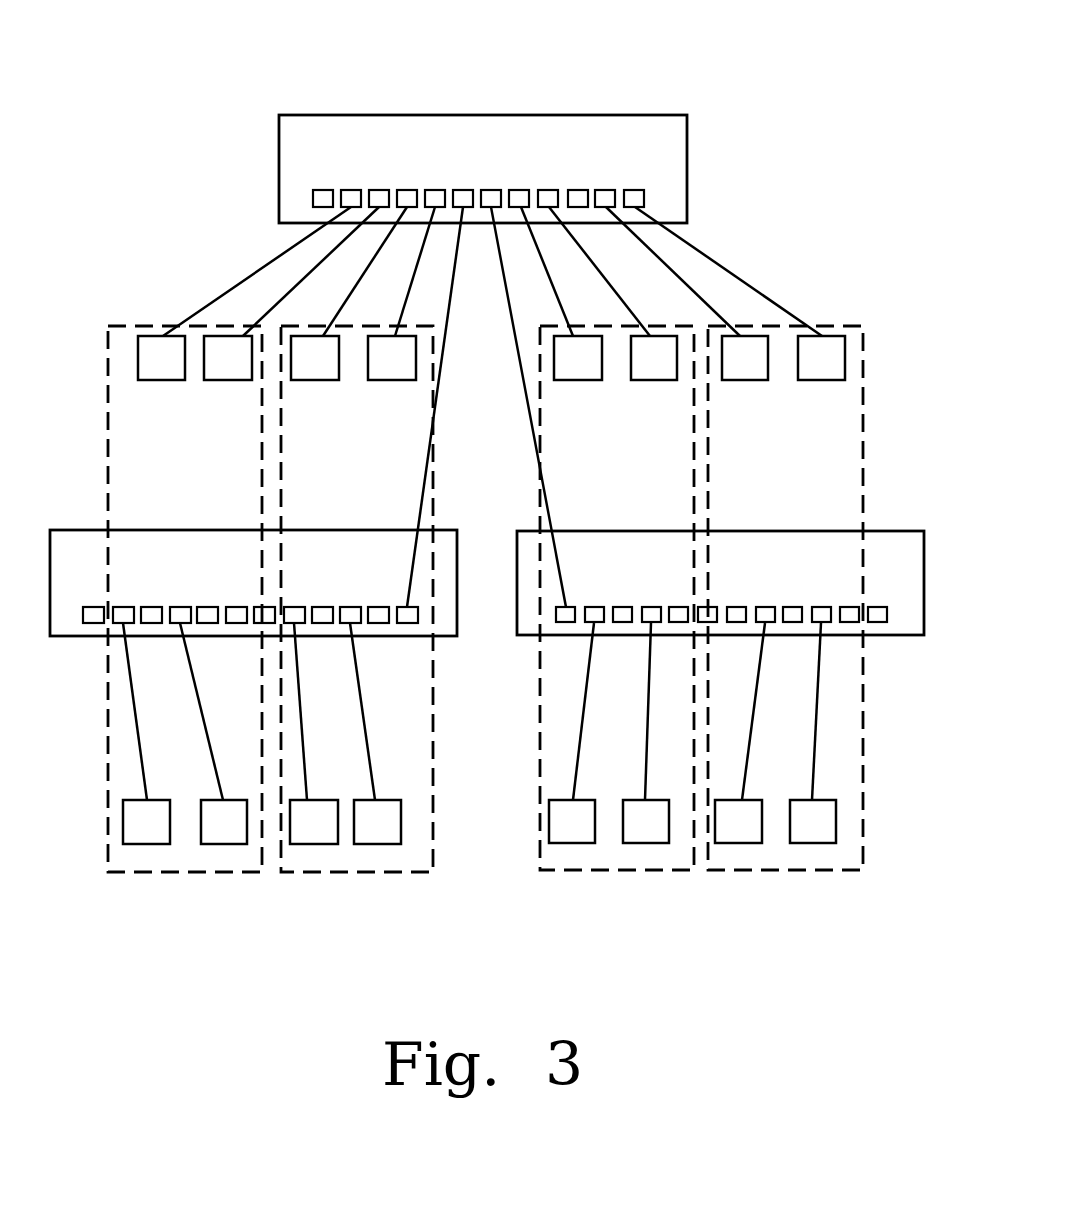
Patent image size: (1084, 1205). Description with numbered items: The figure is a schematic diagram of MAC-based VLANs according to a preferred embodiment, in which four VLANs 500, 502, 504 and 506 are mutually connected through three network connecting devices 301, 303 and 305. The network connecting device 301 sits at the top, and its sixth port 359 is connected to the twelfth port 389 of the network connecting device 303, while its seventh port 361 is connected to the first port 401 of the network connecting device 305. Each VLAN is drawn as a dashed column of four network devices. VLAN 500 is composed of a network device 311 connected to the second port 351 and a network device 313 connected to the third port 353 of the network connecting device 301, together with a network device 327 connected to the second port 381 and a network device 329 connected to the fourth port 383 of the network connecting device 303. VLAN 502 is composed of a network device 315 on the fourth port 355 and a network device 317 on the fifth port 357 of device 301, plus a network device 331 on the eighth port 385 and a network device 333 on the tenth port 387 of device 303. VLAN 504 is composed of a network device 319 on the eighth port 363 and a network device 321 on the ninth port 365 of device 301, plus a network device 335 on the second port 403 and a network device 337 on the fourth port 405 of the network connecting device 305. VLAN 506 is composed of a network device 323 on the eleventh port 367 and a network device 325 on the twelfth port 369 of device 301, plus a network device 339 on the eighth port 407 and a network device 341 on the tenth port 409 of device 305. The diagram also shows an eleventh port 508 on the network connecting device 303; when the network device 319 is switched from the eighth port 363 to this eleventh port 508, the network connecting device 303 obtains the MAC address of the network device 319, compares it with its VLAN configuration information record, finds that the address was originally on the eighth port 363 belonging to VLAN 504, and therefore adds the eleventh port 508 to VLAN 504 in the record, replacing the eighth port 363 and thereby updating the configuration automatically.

The network connecting device 301 is at (673, 173).
The network connecting device 303 is at (68, 615).
The network connecting device 305 is at (893, 628).
The network device 311 is at (160, 368).
The network device 313 is at (238, 370).
The network device 315 is at (313, 370).
The network device 317 is at (387, 365).
The network device 319 is at (578, 365).
The network device 321 is at (652, 373).
The network device 323 is at (747, 368).
The network device 325 is at (828, 368).
The network device 327 is at (155, 827).
The network device 329 is at (227, 828).
The network device 331 is at (308, 827).
The network device 333 is at (377, 828).
The network device 335 is at (572, 827).
The network device 337 is at (642, 825).
The network device 339 is at (735, 828).
The network device 341 is at (813, 828).
The second port 351 is at (352, 192).
The third port 353 is at (382, 192).
The fourth port 355 is at (412, 192).
The fifth port 357 is at (436, 192).
The sixth port 359 is at (464, 192).
The seventh port 361 is at (491, 192).
The eighth port 363 is at (521, 192).
The ninth port 365 is at (551, 192).
The eleventh port 367 is at (605, 192).
The twelfth port 369 is at (634, 192).
The second port 381 is at (124, 607).
The fourth port 383 is at (182, 607).
The eighth port 385 is at (296, 607).
The tenth port 387 is at (351, 607).
The twelfth port 389 is at (402, 607).
The first port 401 is at (567, 607).
The second port 403 is at (594, 611).
The fourth port 405 is at (651, 611).
The eighth port 407 is at (767, 611).
The tenth port 409 is at (820, 611).
The VLAN 500 is at (188, 860).
The VLAN 502 is at (347, 855).
The VLAN 504 is at (610, 847).
The VLAN 506 is at (777, 852).
The eleventh port 508 is at (380, 623).